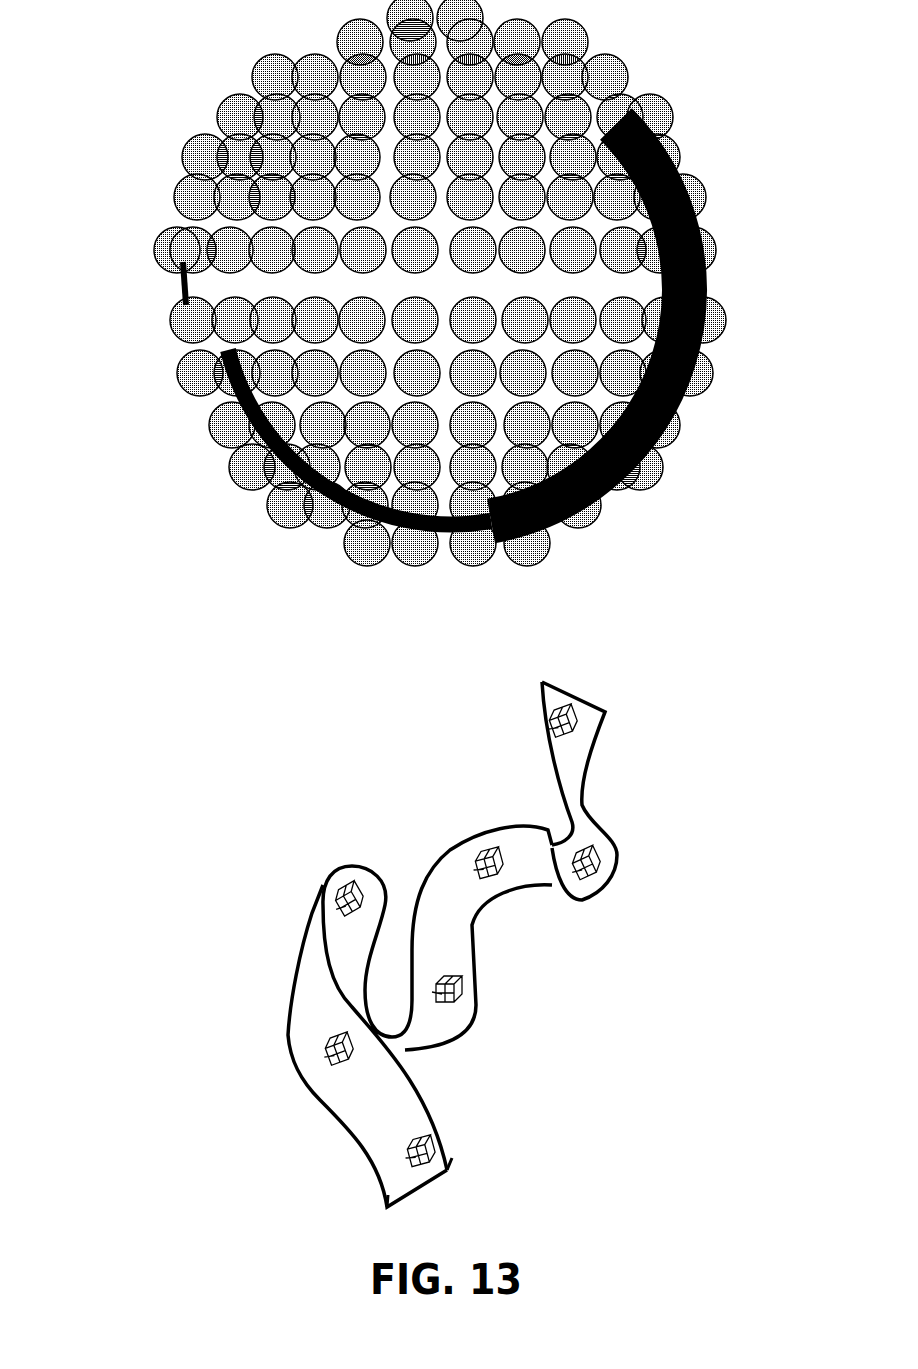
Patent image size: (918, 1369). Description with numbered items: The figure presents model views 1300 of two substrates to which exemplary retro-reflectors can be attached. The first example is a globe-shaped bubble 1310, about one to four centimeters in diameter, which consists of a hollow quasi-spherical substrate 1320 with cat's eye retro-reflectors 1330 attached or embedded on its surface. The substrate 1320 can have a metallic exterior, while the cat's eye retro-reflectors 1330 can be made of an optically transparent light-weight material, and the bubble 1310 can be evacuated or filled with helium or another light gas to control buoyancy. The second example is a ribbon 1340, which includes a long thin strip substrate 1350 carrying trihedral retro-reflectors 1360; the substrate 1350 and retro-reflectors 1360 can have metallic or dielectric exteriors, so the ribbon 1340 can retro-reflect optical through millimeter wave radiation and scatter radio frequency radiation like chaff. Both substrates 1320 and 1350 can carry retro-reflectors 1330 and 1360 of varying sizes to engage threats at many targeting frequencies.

The model views 1300 is at (150, 561).
The globe-shaped bubble 1310 is at (738, 552).
The hollow quasi-spherical substrate 1320 is at (183, 283).
The cat's eye retro-reflectors 1330 is at (178, 333).
The ribbon 1340 is at (738, 690).
The long thin strip substrate 1350 is at (290, 975).
The trihedral retro-reflectors 1360 is at (440, 1127).